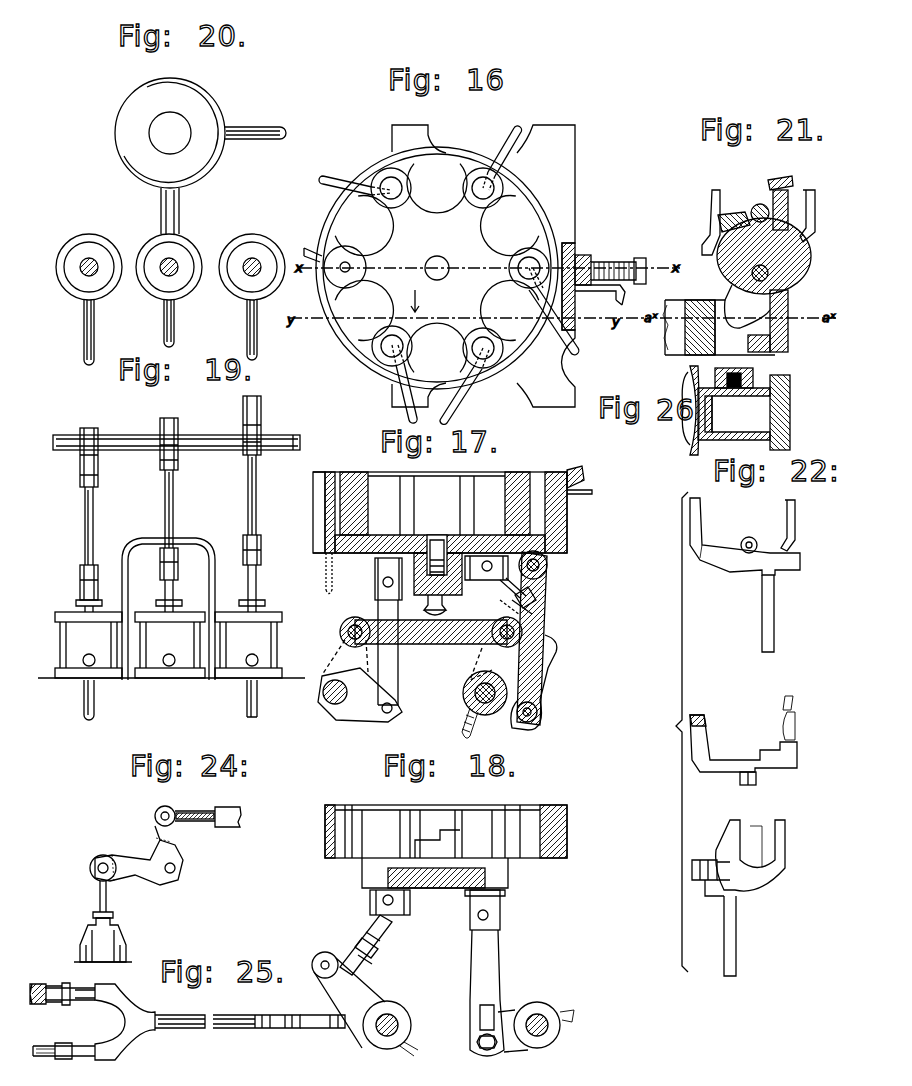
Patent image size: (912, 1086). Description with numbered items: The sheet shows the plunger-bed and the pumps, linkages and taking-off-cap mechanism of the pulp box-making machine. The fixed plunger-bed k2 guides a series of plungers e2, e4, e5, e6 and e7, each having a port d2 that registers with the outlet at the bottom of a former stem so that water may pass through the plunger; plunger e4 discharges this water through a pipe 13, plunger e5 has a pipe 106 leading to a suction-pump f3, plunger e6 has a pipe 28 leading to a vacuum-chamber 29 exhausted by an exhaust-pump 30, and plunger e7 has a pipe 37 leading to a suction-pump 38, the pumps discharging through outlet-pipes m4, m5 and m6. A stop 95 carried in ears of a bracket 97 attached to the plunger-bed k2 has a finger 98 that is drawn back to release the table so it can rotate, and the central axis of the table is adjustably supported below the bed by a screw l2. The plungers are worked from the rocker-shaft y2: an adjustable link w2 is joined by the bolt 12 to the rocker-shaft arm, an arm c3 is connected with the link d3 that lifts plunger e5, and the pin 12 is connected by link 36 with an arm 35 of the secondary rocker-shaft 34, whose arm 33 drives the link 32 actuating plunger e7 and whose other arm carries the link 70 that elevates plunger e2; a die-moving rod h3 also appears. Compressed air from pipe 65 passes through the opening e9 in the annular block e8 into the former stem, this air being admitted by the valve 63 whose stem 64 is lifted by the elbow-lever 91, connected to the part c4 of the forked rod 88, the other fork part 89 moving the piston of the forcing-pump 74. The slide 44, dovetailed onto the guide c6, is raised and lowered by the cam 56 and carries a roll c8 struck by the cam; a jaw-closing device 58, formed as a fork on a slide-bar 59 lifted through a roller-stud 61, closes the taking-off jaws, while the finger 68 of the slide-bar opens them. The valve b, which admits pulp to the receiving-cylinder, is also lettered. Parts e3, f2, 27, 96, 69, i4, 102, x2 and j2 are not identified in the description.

In FIG. 20, the vacuum-chamber 29 is at (170, 133).
In FIG. 19, the vacuum-chamber 29 is at (138, 548).
In FIG. 20, the pipe 28 is at (255, 124).
In FIG. 16, the pipe 28 is at (448, 410).
In FIG. 20, the suction-pump 38 is at (84, 265).
In FIG. 19, the suction-pump 38 is at (88, 553).
In FIG. 20, the exhaust-pump 30 is at (166, 261).
In FIG. 19, the exhaust-pump 30 is at (170, 548).
In FIG. 20, the suction-pump f3 is at (252, 258).
In FIG. 19, the suction-pump f3 is at (272, 645).
In FIG. 20, the outlet-pipe m4 is at (72, 332).
In FIG. 20, the outlet-pipe m5 is at (156, 323).
In FIG. 20, the outlet-pipe m6 is at (240, 330).
In FIG. 16, the plunger-bed k2 is at (445, 266).
In FIG. 21, the plunger-bed k2 is at (668, 348).
In FIG. 17, the plunger-bed k2 is at (452, 530).
In FIG. 18, the plunger-bed k2 is at (567, 828).
In FIG. 16, the port d2 is at (472, 190).
In FIG. 17, the port d2 is at (536, 478).
In FIG. 16, the plunger e2 is at (388, 170).
In FIG. 17, the plunger e2 is at (375, 576).
In FIG. 16, the piston pin e3 is at (346, 279).
In FIG. 16, the plunger e4 is at (484, 168).
In FIG. 17, the plunger e4 is at (486, 576).
In FIG. 16, the plunger e5 is at (548, 252).
In FIG. 17, the plunger e5 is at (556, 478).
In FIG. 16, the plunger e6 is at (500, 346).
In FIG. 18, the plunger e6 is at (370, 893).
In FIG. 18, the plunger e7 is at (502, 898).
In FIG. 17, the annular block e8 is at (352, 461).
In FIG. 16, the opening e9 is at (328, 272).
In FIG. 17, the opening e9 is at (322, 497).
In FIG. 16, the rod f2 is at (348, 179).
In FIG. 16, the pipe 13 is at (506, 149).
In FIG. 16, the pipe 106 is at (567, 316).
In FIG. 19, the pipe 106 is at (231, 698).
In FIG. 16, the pipe 37 is at (406, 415).
In FIG. 19, the pipe 37 is at (82, 704).
In FIG. 16, the ring 27 is at (368, 368).
In FIG. 16, the stop 95 is at (586, 256).
In FIG. 16, the threaded screw 96 is at (610, 262).
In FIG. 16, the bracket 97 is at (640, 258).
In FIG. 16, the finger 98 is at (611, 296).
In FIG. 21, the cam 56 is at (806, 268).
In FIG. 21, the roll c8 is at (756, 208).
In FIG. 21, the finger 68 is at (716, 200).
In FIG. 22, the finger 68 is at (712, 726).
In FIG. 21, the slide 44 is at (798, 308).
In FIG. 26, the slide 44 is at (790, 406).
In FIG. 21, the jaw-closing device 58 is at (817, 216).
In FIG. 22, the jaw-closing device 58 is at (722, 836).
In FIG. 21, the housing 69 is at (722, 282).
In FIG. 21, the valve b is at (755, 303).
In FIG. 21, the guide c6 is at (756, 345).
In FIG. 26, the guide c6 is at (760, 428).
In FIG. 21, the slide-bar 59 is at (752, 366).
In FIG. 26, the slide-bar 59 is at (756, 370).
In FIG. 22, the slide-bar 59 is at (740, 946).
In FIG. 22, the roller-stud 61 is at (752, 538).
In FIG. 17, the pipe 65 is at (324, 588).
In FIG. 17, the valve i4 is at (438, 557).
In FIG. 17, the screw l2 is at (424, 612).
In FIG. 17, the link 70 is at (388, 652).
In FIG. 17, the link 36 is at (431, 640).
In FIG. 17, the arm 35 is at (345, 657).
In FIG. 17, the arm 33 is at (360, 695).
In FIG. 18, the arm 33 is at (513, 1031).
In FIG. 17, the secondary rocker-shaft 34 is at (326, 704).
In FIG. 18, the secondary rocker-shaft 34 is at (540, 1010).
In FIG. 17, the nut 102 is at (512, 600).
In FIG. 17, the bolt 12 is at (500, 616).
In FIG. 17, the link d3 is at (548, 604).
In FIG. 17, the lever x2 is at (550, 652).
In FIG. 18, the lever x2 is at (361, 1000).
In FIG. 17, the die-moving rod h3 is at (476, 660).
In FIG. 17, the arm c3 is at (496, 716).
In FIG. 17, the screw j2 is at (462, 700).
In FIG. 18, the adjustable link w2 is at (374, 946).
In FIG. 18, the rocker-shaft y2 is at (402, 1025).
In FIG. 18, the link 32 is at (487, 993).
In FIG. 24, the elbow-lever 91 is at (136, 845).
In FIG. 24, the fork part c4 is at (200, 810).
In FIG. 25, the fork part c4 is at (70, 1044).
In FIG. 24, the stem 64 is at (108, 898).
In FIG. 24, the valve 63 is at (103, 940).
In FIG. 25, the fork part 89 is at (70, 986).
In FIG. 25, the forcing-pump 74 is at (46, 985).
In FIG. 25, the rod 88 is at (220, 1022).